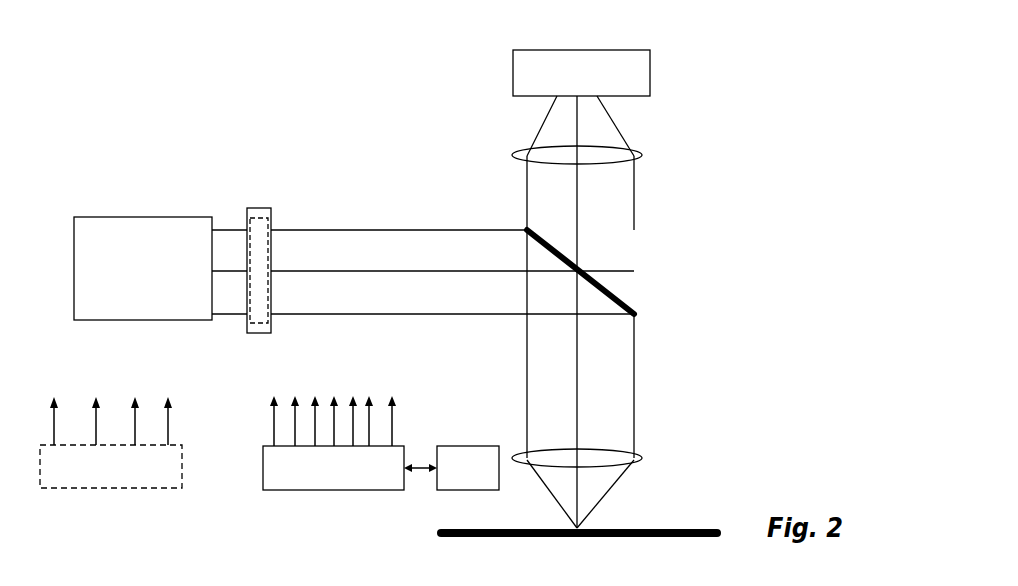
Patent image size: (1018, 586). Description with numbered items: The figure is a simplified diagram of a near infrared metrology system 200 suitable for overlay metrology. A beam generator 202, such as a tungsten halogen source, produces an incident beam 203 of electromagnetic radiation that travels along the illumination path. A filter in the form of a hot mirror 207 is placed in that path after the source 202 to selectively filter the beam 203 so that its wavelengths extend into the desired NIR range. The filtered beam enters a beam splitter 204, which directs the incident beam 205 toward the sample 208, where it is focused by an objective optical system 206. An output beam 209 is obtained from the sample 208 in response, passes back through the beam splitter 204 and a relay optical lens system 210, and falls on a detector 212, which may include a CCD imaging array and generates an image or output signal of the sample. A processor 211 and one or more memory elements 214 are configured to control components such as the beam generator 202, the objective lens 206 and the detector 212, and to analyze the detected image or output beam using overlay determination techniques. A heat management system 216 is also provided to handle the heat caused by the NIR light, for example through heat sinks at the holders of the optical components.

The metrology system 200 is at (802, 56).
The beam generator 202 is at (141, 204).
The incident beam 203 is at (400, 230).
The beam splitter 204 is at (615, 290).
The incident beam 205 is at (634, 335).
The objective optical system 206 is at (640, 457).
The hot mirror 207 is at (271, 210).
The sample 208 is at (440, 533).
The output beam 209 is at (634, 236).
The relay optical lens system 210 is at (642, 155).
The processor 211 is at (263, 459).
The detector 212 is at (650, 73).
The memory 214 is at (457, 490).
The heat management system 216 is at (133, 488).